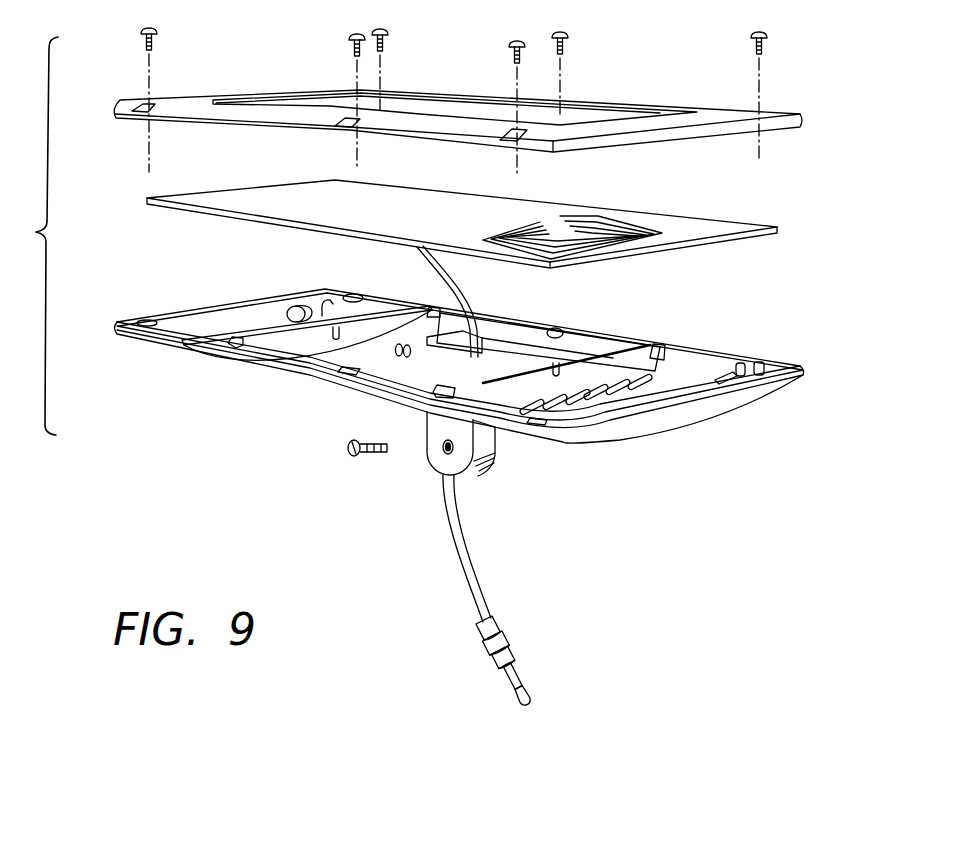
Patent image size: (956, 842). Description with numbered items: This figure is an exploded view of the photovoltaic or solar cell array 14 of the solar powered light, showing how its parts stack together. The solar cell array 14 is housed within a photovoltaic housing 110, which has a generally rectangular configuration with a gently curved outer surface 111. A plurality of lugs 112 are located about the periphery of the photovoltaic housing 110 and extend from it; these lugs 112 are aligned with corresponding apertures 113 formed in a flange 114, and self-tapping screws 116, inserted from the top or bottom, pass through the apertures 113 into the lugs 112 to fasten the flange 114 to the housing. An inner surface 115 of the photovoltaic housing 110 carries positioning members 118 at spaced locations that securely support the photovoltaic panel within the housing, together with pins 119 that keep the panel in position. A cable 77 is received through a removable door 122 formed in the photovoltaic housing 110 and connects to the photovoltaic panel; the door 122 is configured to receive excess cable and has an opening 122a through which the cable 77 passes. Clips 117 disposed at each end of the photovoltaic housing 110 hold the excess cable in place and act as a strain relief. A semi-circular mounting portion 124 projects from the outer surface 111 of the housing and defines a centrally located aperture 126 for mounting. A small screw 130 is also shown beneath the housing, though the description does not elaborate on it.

The solar cell array 14 is at (197, 378).
The cable 77 is at (477, 582).
The photovoltaic housing 110 is at (781, 390).
The outer surface 111 is at (657, 443).
The lugs 112 is at (357, 290).
The apertures 113 is at (151, 102).
The flange 114 is at (653, 125).
The inner surface 115 is at (613, 345).
The self-tapping screws 116 is at (352, 46).
The clips 117 is at (290, 306).
The positioning members 118 is at (650, 367).
The pins 119 is at (767, 368).
The removable door 122 is at (526, 340).
The opening 122a is at (497, 332).
The semi-circular mounting portion 124 is at (495, 460).
The aperture 126 is at (447, 448).
The housing screw 130 is at (381, 436).